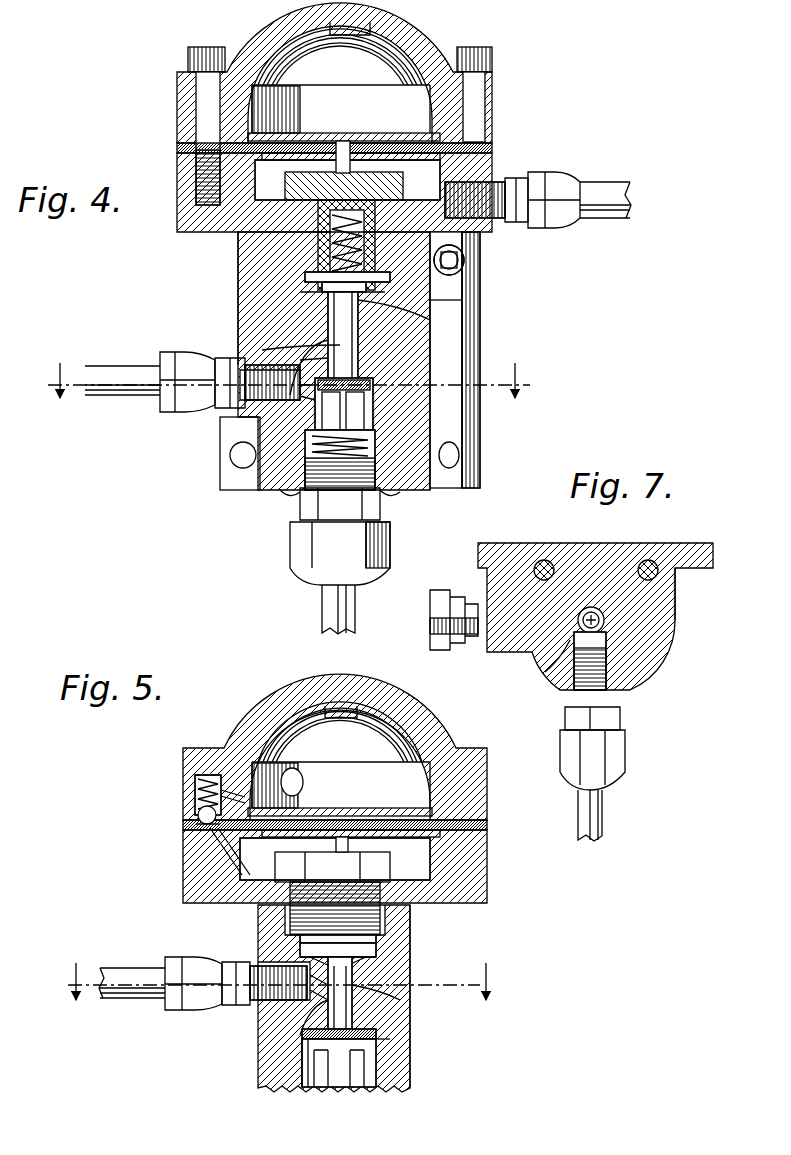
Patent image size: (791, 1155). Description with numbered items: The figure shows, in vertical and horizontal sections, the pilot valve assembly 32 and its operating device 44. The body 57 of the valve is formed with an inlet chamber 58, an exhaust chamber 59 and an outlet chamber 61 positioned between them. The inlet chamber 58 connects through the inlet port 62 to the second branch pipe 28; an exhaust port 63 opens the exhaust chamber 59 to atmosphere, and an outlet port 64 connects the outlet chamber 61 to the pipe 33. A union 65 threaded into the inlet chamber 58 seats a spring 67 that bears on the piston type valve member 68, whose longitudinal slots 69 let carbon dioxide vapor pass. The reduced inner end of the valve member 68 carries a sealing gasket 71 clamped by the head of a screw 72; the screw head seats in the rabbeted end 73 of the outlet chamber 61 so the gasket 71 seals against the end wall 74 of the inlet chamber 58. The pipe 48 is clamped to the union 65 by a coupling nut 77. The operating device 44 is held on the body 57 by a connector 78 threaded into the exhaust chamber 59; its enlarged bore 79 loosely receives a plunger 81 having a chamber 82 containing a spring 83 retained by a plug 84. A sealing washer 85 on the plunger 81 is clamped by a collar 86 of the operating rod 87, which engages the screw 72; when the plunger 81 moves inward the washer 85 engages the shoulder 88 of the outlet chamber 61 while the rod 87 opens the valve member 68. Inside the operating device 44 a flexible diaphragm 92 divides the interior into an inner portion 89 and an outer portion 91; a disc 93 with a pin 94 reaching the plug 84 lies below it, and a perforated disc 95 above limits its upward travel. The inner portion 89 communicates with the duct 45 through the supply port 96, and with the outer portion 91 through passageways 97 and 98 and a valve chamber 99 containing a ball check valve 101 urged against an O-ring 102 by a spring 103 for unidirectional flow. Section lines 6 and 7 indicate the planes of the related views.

In FIG. 4, the pilot valve operating device 44 is at (432, 44).
In FIG. 5, the pilot valve operating device 44 is at (414, 700).
In FIG. 4, the outer portion of chambered interior 91 is at (436, 109).
In FIG. 5, the outer portion of chambered interior 91 is at (432, 796).
In FIG. 4, the flexible diaphragm 92 is at (432, 147).
In FIG. 5, the flexible diaphragm 92 is at (368, 820).
In FIG. 4, the disc 93 is at (395, 153).
In FIG. 5, the disc 93 is at (402, 830).
In FIG. 4, the pin 94 is at (346, 142).
In FIG. 5, the pin 94 is at (338, 842).
In FIG. 4, the perforated disc 95 is at (310, 138).
In FIG. 5, the perforated disc 95 is at (308, 808).
In FIG. 4, the inner portion of chambered interior 89 is at (466, 178).
In FIG. 5, the inner portion of chambered interior 89 is at (470, 862).
In FIG. 4, the connector 78 is at (400, 191).
In FIG. 5, the connector 78 is at (388, 868).
In FIG. 4, the plug 84 is at (343, 215).
In FIG. 4, the enlarged bore 79 is at (318, 210).
In FIG. 4, the exhaust port 63 is at (290, 258).
In FIG. 4, the plunger 81 is at (238, 238).
In FIG. 5, the plunger 81 is at (360, 966).
In FIG. 4, the sealing washer 85 is at (322, 285).
In FIG. 5, the sealing washer 85 is at (300, 940).
In FIG. 4, the shoulder 88 is at (322, 296).
In FIG. 5, the shoulder 88 is at (300, 962).
In FIG. 4, the operating rod 87 is at (334, 310).
In FIG. 7, the operating rod 87 is at (570, 650).
In FIG. 5, the operating rod 87 is at (352, 992).
In FIG. 4, the rabbeted end 73 is at (262, 350).
In FIG. 5, the rabbeted end 73 is at (376, 1034).
In FIG. 4, the end wall 74 is at (300, 360).
In FIG. 5, the end wall 74 is at (395, 1050).
In FIG. 4, the chamber 82 is at (463, 248).
In FIG. 4, the spring 83 is at (458, 262).
In FIG. 4, the exhaust chamber 59 is at (390, 280).
In FIG. 5, the exhaust chamber 59 is at (376, 952).
In FIG. 4, the collar 86 is at (445, 303).
In FIG. 5, the collar 86 is at (352, 976).
In FIG. 4, the outlet chamber 61 is at (360, 318).
In FIG. 7, the outlet chamber 61 is at (597, 608).
In FIG. 5, the outlet chamber 61 is at (352, 1010).
In FIG. 4, the pilot valve assembly 32 is at (484, 328).
In FIG. 7, the pilot valve assembly 32 is at (673, 635).
In FIG. 5, the pilot valve assembly 32 is at (410, 930).
In FIG. 4, the screw 72 is at (360, 342).
In FIG. 7, the screw 72 is at (589, 610).
In FIG. 5, the screw 72 is at (310, 1012).
In FIG. 4, the body 57 is at (408, 352).
In FIG. 7, the body 57 is at (668, 607).
In FIG. 5, the body 57 is at (398, 1066).
In FIG. 4, the sealing gasket 71 is at (373, 386).
In FIG. 5, the sealing gasket 71 is at (312, 1042).
In FIG. 4, the inlet chamber 58 is at (360, 398).
In FIG. 5, the inlet chamber 58 is at (305, 1080).
In FIG. 4, the valve member 68 is at (350, 420).
In FIG. 5, the valve member 68 is at (356, 1088).
In FIG. 4, the slots 69 is at (338, 432).
In FIG. 5, the slots 69 is at (332, 1088).
In FIG. 4, the spring 67 is at (305, 460).
In FIG. 4, the inlet port 62 is at (290, 393).
In FIG. 4, the union 65 is at (300, 500).
In FIG. 4, the coupling nut 77 is at (292, 547).
In FIG. 4, the pipe 48 is at (326, 603).
In FIG. 4, the second branch pipe 28 is at (122, 398).
In FIG. 7, the second branch pipe 28 is at (432, 622).
In FIG. 4, the supply port 96 is at (470, 194).
In FIG. 4, the duct 45 is at (588, 186).
In FIG. 4, the section line 6- 6 is at (290, 380).
In FIG. 7, the outlet port 64 is at (602, 640).
In FIG. 5, the outlet port 64 is at (316, 997).
In FIG. 7, the pipe 33 is at (606, 823).
In FIG. 5, the pipe 33 is at (142, 994).
In FIG. 5, the passageway 98 is at (232, 765).
In FIG. 5, the valve chamber 99 is at (196, 790).
In FIG. 5, the ball check valve 101 is at (200, 813).
In FIG. 5, the O-ring 102 is at (200, 824).
In FIG. 5, the spring 103 is at (200, 776).
In FIG. 5, the passageway 97 is at (205, 862).
In FIG. 5, the section line 7- 7 is at (277, 981).